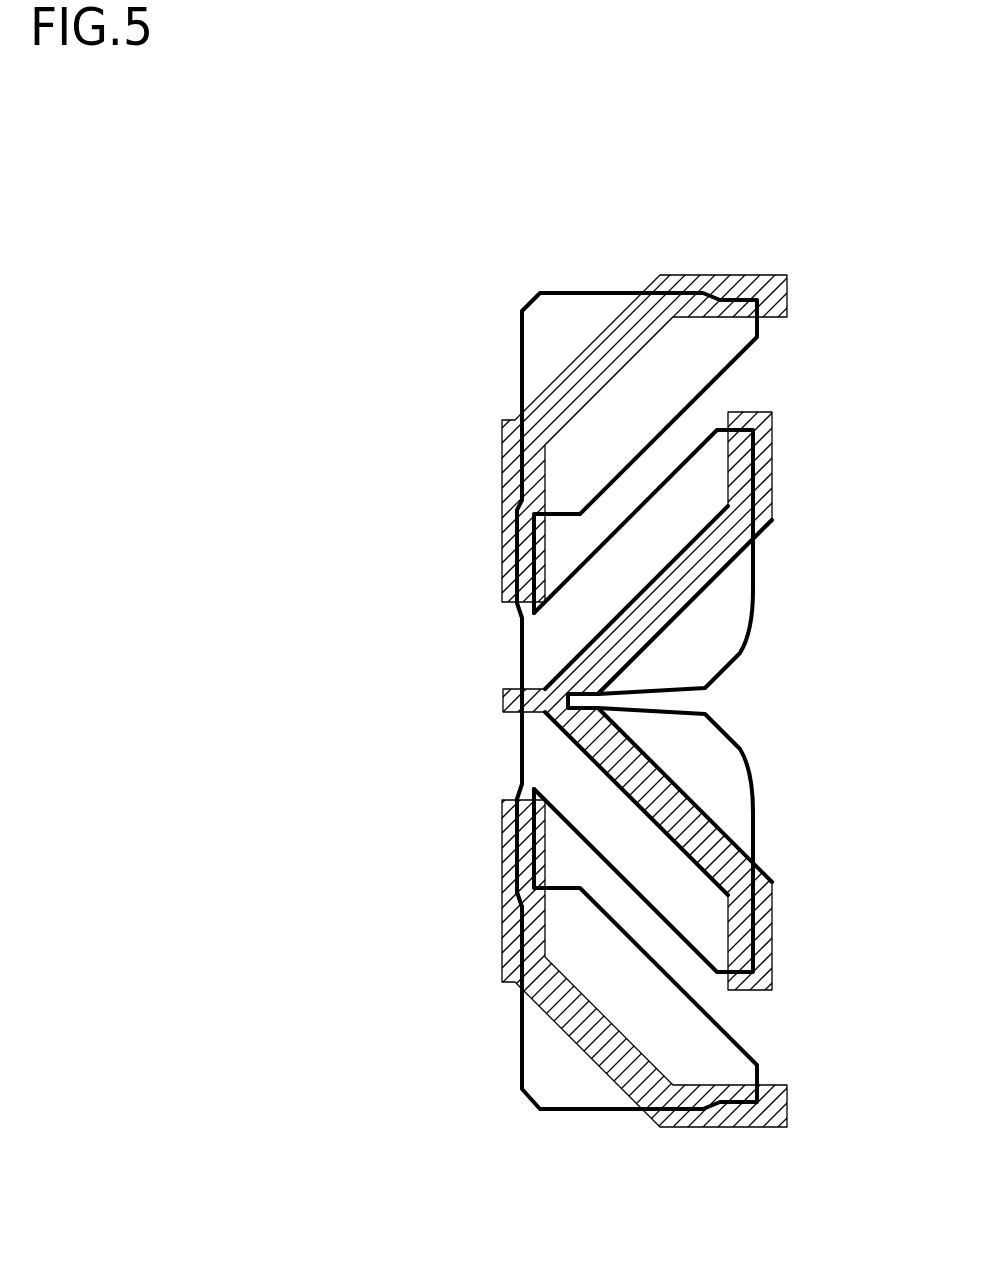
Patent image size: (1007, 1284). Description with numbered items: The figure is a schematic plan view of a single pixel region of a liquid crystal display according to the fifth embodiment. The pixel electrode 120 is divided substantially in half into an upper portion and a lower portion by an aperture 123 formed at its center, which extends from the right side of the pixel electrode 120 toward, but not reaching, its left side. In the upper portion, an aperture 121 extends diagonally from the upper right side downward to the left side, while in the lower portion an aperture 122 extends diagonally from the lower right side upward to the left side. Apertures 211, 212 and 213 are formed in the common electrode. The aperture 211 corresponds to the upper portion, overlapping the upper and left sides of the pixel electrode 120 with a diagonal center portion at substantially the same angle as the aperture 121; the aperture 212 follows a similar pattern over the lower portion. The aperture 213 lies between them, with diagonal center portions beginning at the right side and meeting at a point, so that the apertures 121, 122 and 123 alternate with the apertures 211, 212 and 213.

The pixel electrode 120 is at (757, 587).
The aperture 121 is at (718, 408).
The aperture 122 is at (738, 1014).
The aperture 123 is at (727, 703).
The aperture 211 is at (735, 275).
The aperture 212 is at (622, 1090).
The aperture 213 is at (772, 485).